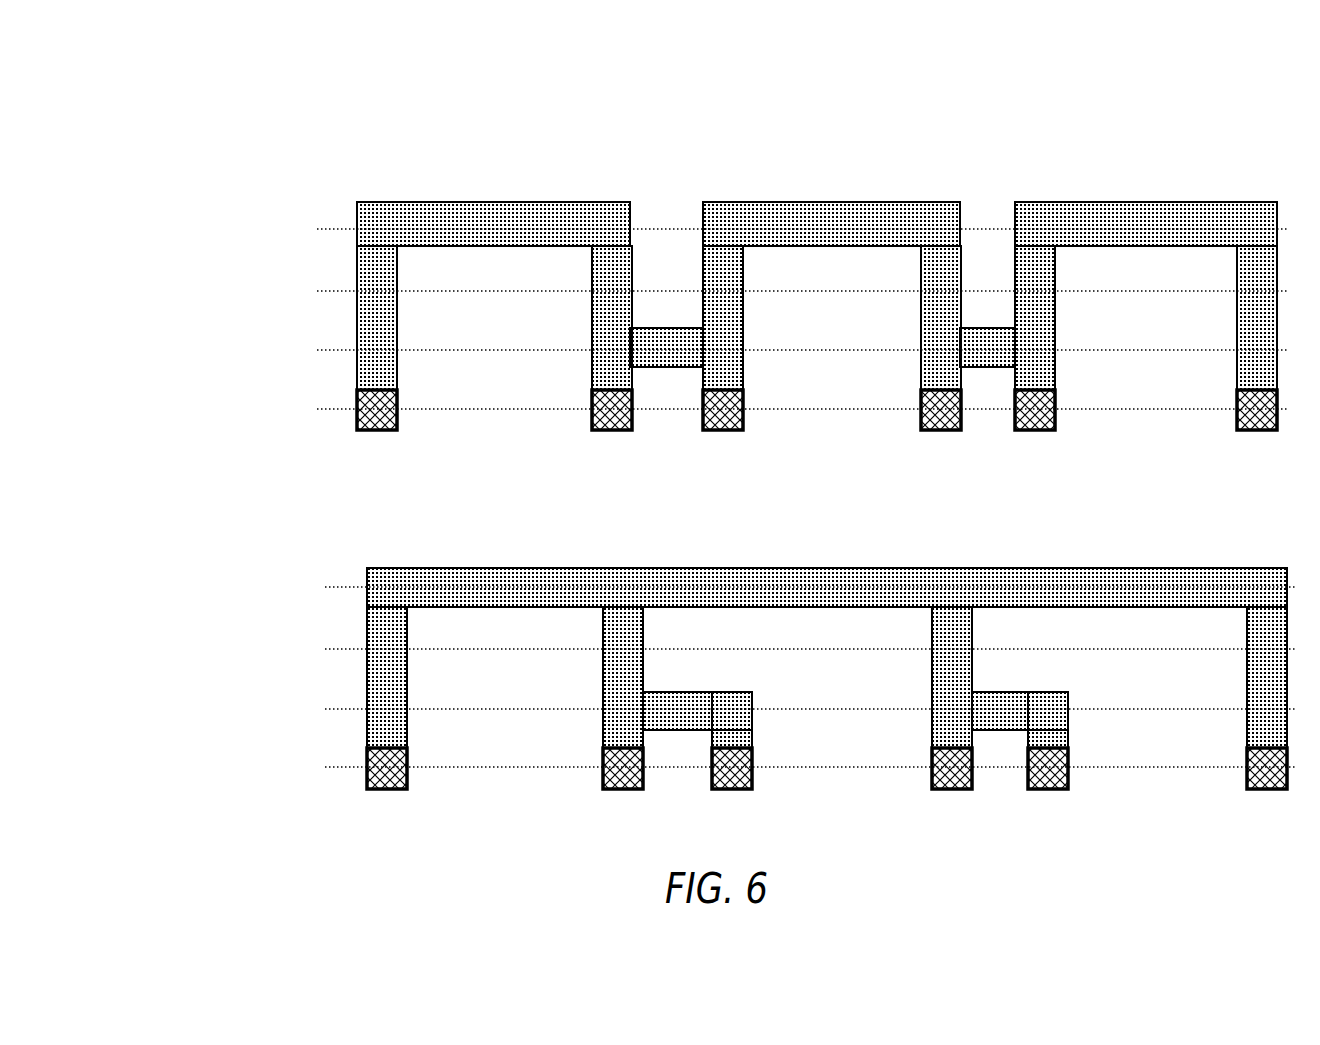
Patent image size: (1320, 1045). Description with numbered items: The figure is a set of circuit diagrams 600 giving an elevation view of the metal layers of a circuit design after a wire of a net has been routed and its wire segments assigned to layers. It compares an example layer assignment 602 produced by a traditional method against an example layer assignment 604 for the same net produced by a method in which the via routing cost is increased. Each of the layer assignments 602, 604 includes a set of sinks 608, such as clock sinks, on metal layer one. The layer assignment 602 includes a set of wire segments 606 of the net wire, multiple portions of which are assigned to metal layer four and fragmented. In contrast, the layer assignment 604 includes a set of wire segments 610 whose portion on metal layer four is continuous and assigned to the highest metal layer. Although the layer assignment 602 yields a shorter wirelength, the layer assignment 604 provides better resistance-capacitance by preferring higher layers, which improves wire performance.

The set of circuit diagrams 600 is at (136, 129).
The layer assignment 602 is at (232, 188).
The layer assignment 604 is at (233, 545).
The wire segments 606 is at (357, 202).
The sinks 608 is at (357, 430).
The wire segments 610 is at (367, 568).